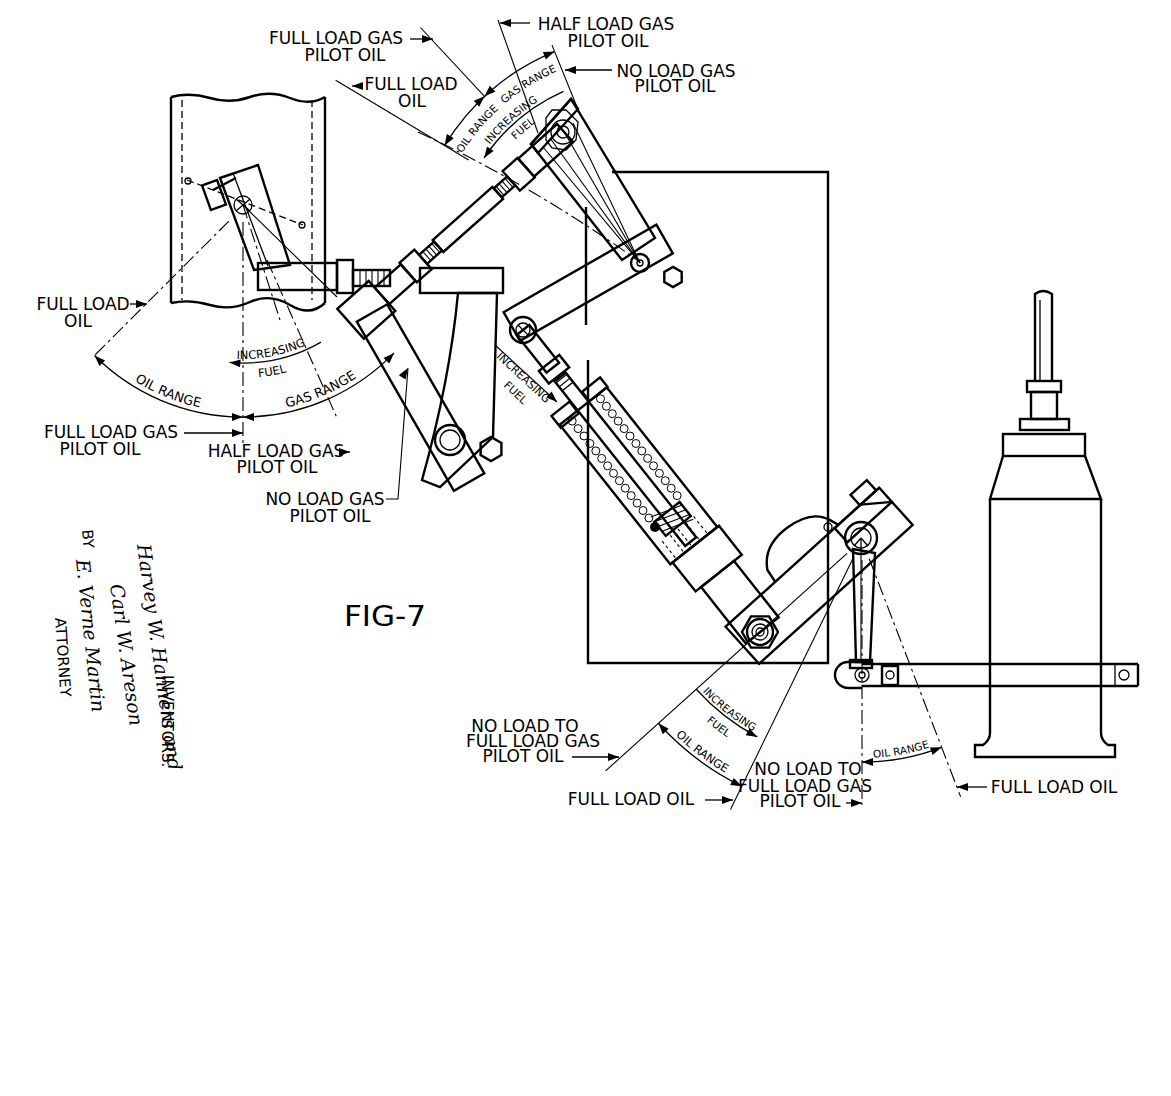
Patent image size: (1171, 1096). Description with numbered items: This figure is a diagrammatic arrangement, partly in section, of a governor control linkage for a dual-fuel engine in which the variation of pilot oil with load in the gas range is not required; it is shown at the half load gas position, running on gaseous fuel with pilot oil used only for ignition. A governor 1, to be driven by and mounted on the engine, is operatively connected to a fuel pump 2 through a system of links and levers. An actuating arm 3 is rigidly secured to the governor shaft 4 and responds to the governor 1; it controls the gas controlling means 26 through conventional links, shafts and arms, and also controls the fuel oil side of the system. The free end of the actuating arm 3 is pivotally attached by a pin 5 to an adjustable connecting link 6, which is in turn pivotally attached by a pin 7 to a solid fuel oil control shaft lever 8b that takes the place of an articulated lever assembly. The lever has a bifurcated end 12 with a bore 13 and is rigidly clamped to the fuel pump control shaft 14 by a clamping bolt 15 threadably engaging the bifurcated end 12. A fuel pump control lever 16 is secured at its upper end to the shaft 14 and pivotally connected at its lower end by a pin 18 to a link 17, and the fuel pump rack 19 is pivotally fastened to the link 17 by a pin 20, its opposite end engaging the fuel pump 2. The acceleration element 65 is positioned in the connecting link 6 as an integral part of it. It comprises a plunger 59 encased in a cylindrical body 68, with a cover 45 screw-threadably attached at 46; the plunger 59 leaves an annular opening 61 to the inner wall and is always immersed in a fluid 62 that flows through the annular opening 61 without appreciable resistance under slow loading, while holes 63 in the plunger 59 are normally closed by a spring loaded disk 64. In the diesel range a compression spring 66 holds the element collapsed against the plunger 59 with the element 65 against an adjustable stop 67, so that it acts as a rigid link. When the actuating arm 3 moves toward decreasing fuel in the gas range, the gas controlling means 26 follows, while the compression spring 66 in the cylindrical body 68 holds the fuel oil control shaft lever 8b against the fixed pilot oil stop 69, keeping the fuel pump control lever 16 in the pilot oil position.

The governor 1 is at (832, 253).
The fuel pump 2 is at (1100, 500).
The actuating arm 3 is at (604, 293).
The governor shaft 4 is at (647, 273).
The pin 5 is at (526, 322).
The adjustable connecting link 6 is at (560, 350).
The pin 7 is at (745, 633).
The solid fuel oil control shaft lever 8b is at (790, 643).
The bifurcated end 12 is at (873, 518).
The bore 13 is at (842, 520).
The fuel pump control shaft 14 is at (885, 538).
The clamping bolt 15 is at (870, 486).
The fuel pump control lever 16 is at (875, 575).
The link 17 is at (866, 690).
The pin 18 is at (850, 678).
The fuel pump rack 19 is at (938, 665).
The pin 20 is at (891, 686).
The gas controlling means 26 is at (305, 215).
The cover 45 is at (550, 428).
The screw-threaded attachment 46 is at (612, 402).
The plunger 59 is at (673, 510).
The annular opening 61 is at (687, 520).
The fluid 62 is at (700, 548).
The holes 63 is at (650, 526).
The spring loaded disk 64 is at (663, 540).
The acceleration element 65 is at (683, 447).
The compression spring 66 is at (612, 490).
The adjustable stop 67 is at (573, 370).
The cylindrical body 68 is at (640, 430).
The fixed pilot oil stop 69 is at (788, 542).